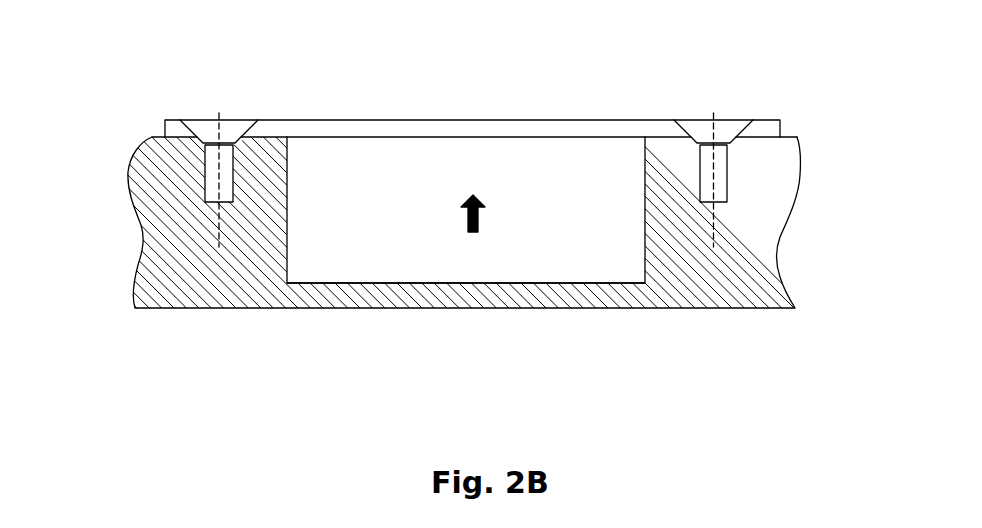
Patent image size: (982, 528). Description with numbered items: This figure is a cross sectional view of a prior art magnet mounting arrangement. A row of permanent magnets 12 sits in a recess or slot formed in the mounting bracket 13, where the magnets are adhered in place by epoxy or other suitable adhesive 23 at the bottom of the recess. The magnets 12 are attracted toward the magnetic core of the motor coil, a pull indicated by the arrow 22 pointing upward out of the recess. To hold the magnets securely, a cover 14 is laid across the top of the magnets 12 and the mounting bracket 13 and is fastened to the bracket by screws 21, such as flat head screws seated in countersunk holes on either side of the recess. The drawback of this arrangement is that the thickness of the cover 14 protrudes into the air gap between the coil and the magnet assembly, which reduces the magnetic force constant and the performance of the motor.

The permanent magnets 12 is at (505, 150).
The mounting bracket 13 is at (685, 287).
The cover 14 is at (362, 135).
The screws 21 is at (220, 141).
The arrow 22 is at (473, 233).
The adhesive 23 is at (405, 283).